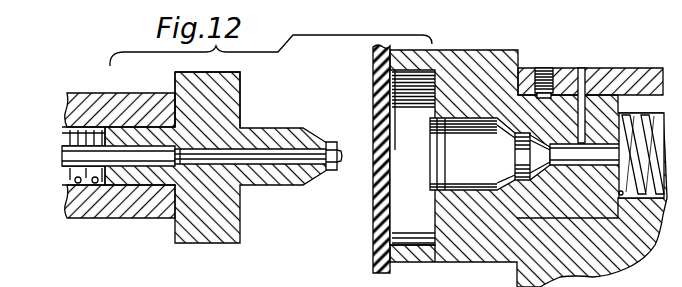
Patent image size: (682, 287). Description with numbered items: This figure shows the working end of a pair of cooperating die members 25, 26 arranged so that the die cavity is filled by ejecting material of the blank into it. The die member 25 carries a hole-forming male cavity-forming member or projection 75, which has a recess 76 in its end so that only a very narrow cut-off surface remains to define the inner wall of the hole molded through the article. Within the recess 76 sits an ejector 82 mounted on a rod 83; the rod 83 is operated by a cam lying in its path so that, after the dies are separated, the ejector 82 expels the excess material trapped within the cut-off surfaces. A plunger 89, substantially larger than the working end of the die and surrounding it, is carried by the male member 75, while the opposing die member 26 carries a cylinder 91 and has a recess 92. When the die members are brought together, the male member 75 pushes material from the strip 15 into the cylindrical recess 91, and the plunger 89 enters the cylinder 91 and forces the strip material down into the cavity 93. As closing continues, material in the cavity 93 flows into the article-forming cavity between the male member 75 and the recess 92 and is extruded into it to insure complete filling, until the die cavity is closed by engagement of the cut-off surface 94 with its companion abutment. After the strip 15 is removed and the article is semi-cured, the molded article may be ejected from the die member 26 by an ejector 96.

The strip 15 is at (372, 80).
The die member 25 is at (132, 221).
The die member 26 is at (520, 50).
The hole-forming projection 75 is at (290, 188).
The recess 76 is at (338, 146).
The ejector 82 is at (325, 173).
The rod 83 is at (263, 158).
The plunger 89 is at (241, 86).
The cylinder 91 is at (455, 252).
The recess 92 is at (475, 133).
The cavity 93 is at (423, 95).
The cut-off surface 94 is at (432, 199).
The ejector 96 is at (602, 93).